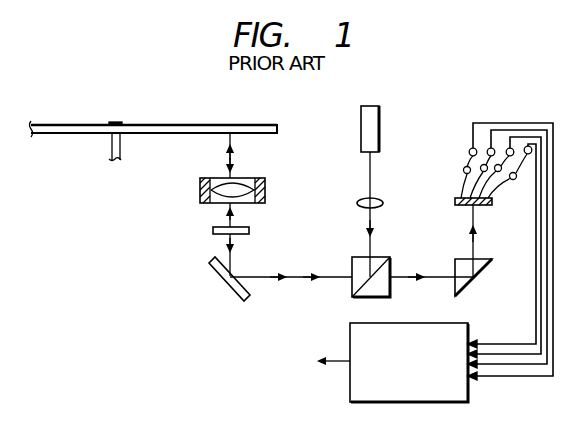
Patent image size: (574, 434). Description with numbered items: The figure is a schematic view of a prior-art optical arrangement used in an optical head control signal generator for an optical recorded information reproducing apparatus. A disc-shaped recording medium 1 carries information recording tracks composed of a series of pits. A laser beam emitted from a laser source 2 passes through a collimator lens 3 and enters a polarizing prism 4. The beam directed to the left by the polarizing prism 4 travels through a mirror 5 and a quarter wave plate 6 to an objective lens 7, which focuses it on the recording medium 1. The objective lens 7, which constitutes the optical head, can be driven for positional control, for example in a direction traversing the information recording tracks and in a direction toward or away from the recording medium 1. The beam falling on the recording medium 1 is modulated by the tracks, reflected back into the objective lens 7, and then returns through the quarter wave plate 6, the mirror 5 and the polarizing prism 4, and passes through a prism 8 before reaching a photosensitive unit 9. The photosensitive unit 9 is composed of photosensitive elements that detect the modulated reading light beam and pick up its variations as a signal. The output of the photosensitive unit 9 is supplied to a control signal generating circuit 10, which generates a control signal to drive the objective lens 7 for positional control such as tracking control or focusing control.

The disc-shaped recording medium 1 is at (168, 125).
The laser source 2 is at (380, 131).
The collimator lens 3 is at (384, 203).
The polarizing prism 4 is at (379, 257).
The mirror 5 is at (228, 277).
The quarter wave plate 6 is at (213, 231).
The objective lens 7 is at (200, 189).
The prism 8 is at (477, 281).
The photosensitive unit 9 is at (479, 206).
The control signal generating circuit 10 is at (468, 328).